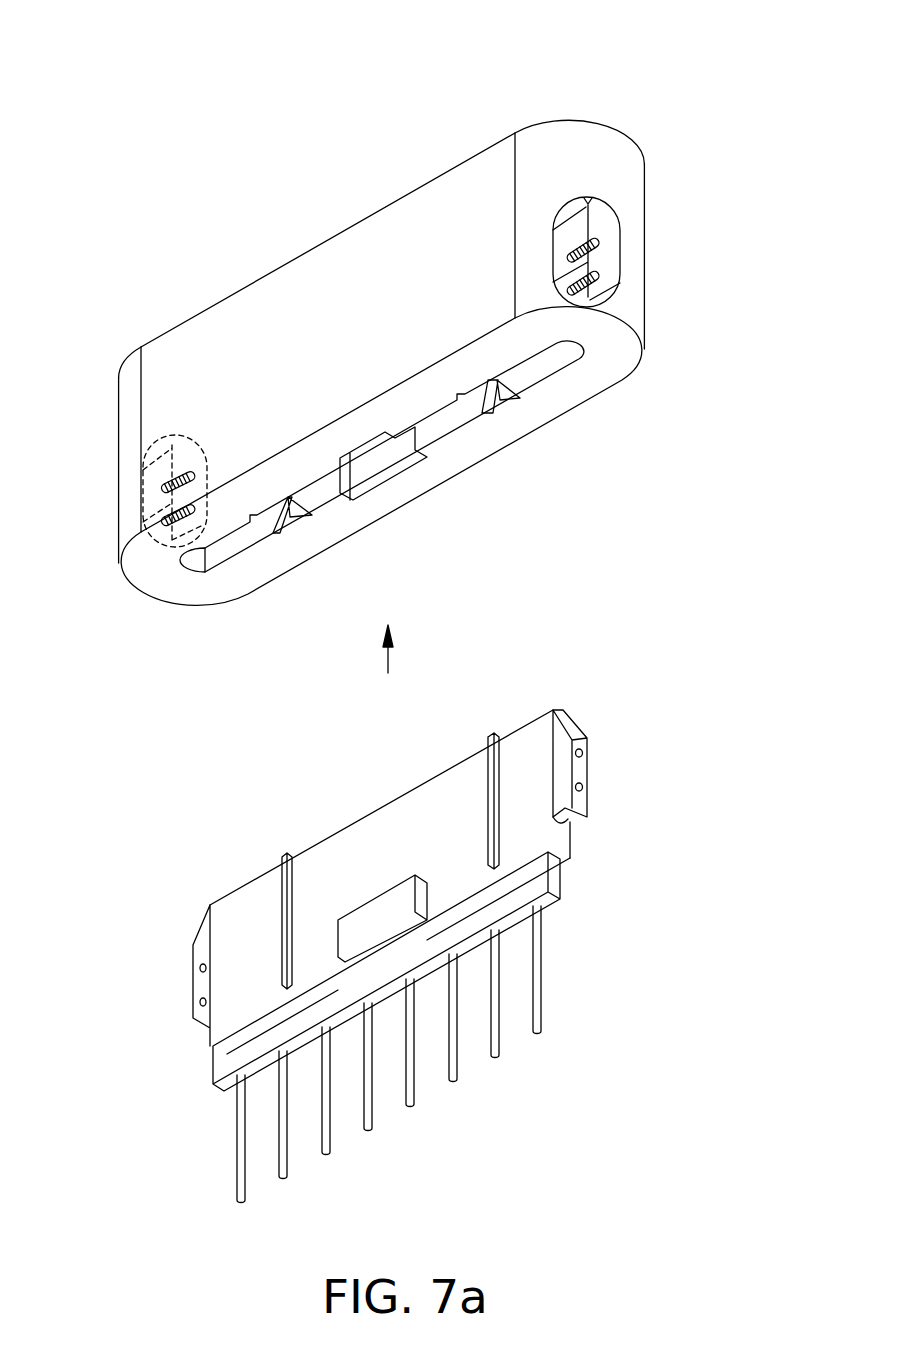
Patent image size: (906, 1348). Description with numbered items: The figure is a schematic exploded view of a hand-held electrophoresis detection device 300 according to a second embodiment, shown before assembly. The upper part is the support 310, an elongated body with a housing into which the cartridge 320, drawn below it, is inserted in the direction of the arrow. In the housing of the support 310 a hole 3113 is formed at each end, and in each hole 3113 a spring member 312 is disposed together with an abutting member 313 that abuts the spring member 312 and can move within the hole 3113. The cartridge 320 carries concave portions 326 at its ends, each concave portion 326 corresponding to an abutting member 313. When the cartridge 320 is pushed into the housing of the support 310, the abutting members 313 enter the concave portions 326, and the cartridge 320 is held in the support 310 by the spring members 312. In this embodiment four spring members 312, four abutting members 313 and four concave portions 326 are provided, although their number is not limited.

The hand-held electrophoresis detection device 300 is at (98, 23).
The support 310 is at (538, 96).
The spring member 312 is at (594, 243).
The hole 3113 is at (597, 247).
The abutting member 313 is at (594, 301).
The cartridge 320 is at (552, 835).
The concave portion 326 is at (588, 785).